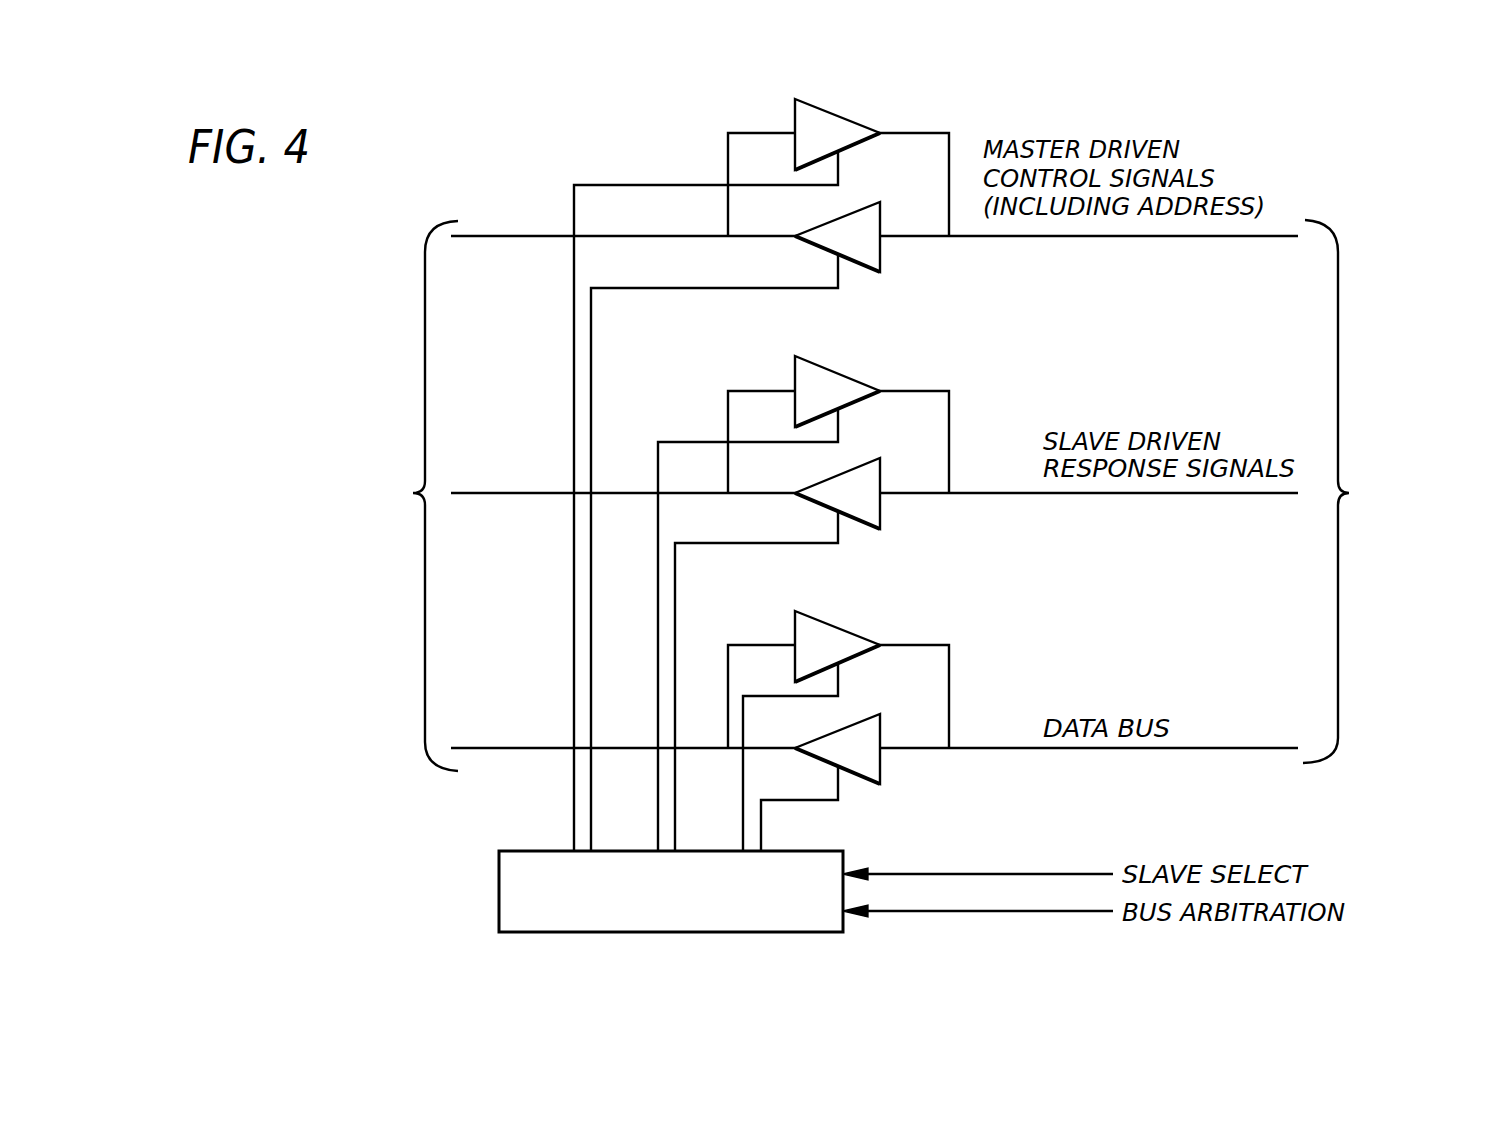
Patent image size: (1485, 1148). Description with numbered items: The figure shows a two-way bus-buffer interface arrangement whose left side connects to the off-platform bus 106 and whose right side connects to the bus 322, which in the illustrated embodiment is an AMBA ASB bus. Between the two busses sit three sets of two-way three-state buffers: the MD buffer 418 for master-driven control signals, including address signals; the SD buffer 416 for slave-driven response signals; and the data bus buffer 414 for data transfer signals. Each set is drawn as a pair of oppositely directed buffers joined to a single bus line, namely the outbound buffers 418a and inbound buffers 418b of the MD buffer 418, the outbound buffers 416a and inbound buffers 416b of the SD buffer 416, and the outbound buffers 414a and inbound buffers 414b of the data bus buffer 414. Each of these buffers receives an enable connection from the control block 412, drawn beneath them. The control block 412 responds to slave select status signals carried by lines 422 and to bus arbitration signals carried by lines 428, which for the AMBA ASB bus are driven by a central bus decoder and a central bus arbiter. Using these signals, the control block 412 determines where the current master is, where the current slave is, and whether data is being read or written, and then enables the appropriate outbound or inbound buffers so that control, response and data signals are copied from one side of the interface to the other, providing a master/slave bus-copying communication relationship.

The off-platform bus 106 is at (376, 496).
The bus 322 is at (1381, 491).
The control block 412 is at (503, 851).
The data bus buffer 414 is at (847, 720).
The outbound buffers of the data bus buffer 414a is at (880, 772).
The inbound buffers of the data bus buffer 414b is at (864, 636).
The SD buffer 416 is at (803, 589).
The outbound buffers of the SD buffer 416a is at (874, 527).
The inbound buffers of the SD buffer 416b is at (862, 378).
The MD buffer 418 is at (767, 469).
The outbound buffers of the MD buffer 418a is at (872, 270).
The inbound buffers of the MD buffer 418b is at (863, 124).
The lines carrying slave select status signals 422 is at (963, 874).
The lines carrying bus arbitration signals 428 is at (960, 912).